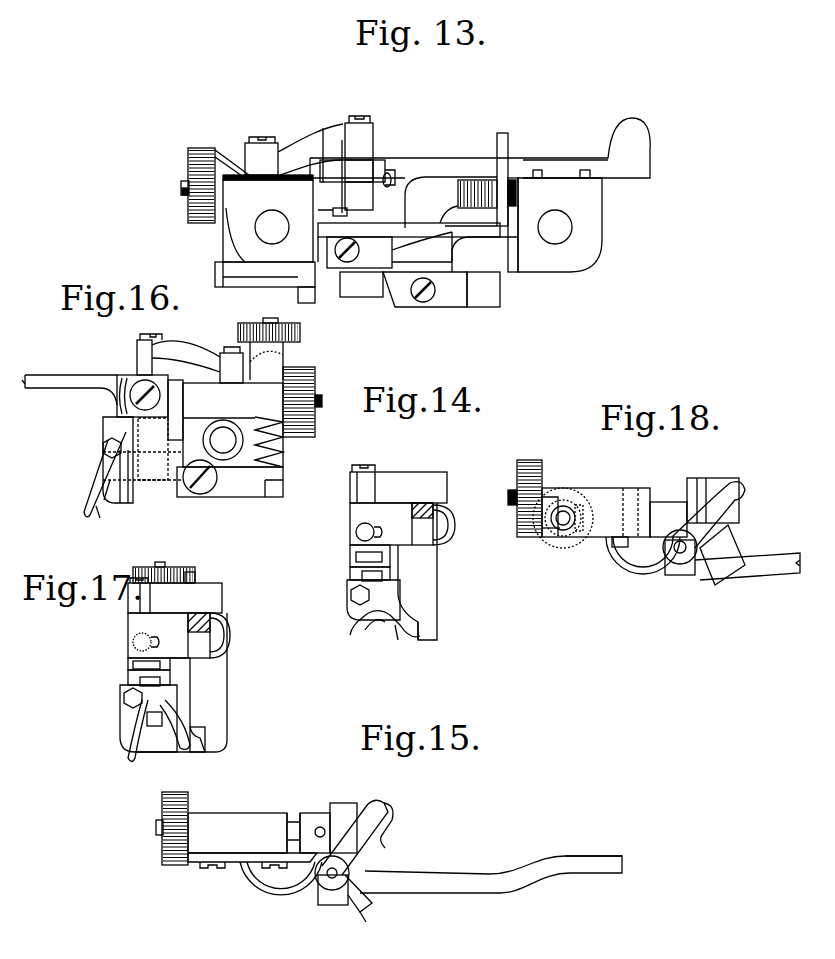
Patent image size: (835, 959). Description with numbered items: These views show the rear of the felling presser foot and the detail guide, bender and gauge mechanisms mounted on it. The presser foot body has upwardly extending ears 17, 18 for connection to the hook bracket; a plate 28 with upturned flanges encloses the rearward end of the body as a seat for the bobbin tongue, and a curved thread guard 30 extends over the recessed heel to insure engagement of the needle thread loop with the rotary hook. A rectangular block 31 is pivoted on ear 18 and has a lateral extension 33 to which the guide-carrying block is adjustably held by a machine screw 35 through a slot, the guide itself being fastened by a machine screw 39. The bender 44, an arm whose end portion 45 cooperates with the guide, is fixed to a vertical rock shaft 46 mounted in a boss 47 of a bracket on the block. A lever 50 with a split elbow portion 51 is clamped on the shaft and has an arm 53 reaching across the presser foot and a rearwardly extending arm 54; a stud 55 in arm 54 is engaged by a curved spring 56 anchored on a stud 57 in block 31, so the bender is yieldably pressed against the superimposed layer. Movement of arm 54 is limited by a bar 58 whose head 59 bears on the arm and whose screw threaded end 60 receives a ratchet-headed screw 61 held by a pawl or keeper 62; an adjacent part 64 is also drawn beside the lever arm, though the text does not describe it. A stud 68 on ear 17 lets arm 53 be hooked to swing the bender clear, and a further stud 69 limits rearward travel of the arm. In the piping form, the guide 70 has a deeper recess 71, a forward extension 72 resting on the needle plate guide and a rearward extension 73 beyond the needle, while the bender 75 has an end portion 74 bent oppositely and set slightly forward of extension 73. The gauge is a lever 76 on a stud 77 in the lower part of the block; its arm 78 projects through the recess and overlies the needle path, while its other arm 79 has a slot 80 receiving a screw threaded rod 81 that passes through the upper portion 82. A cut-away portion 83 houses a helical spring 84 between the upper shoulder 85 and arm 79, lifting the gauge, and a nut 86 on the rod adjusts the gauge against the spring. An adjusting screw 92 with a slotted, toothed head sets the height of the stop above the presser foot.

In FIG. 13, the ear 17 is at (590, 205).
In FIG. 13, the ear 18 is at (236, 212).
In FIG. 13, the plate 28 is at (474, 300).
In FIG. 13, the curved thread guard 30 is at (410, 250).
In FIG. 15, the rectangular block 31 is at (232, 822).
In FIG. 14, the lateral extension 33 is at (352, 574).
In FIG. 17, the lateral extension 33 is at (128, 680).
In FIG. 15, the lateral extension 33 is at (292, 813).
In FIG. 13, the machine screw 35 is at (333, 208).
In FIG. 14, the machine screw 35 is at (356, 556).
In FIG. 17, the machine screw 35 is at (128, 664).
In FIG. 15, the machine screw 35 is at (318, 826).
In FIG. 16, the machine screw 39 is at (102, 455).
In FIG. 14, the machine screw 39 is at (352, 595).
In FIG. 17, the machine screw 39 is at (124, 698).
In FIG. 13, the bender 44 is at (396, 296).
In FIG. 16, the bender 44 is at (125, 505).
In FIG. 18, the bender 44 is at (708, 505).
In FIG. 17, the bender 44 is at (160, 752).
In FIG. 18, the end portion 45 is at (740, 483).
In FIG. 18, the vertical rock shaft 46 is at (681, 555).
In FIG. 15, the vertical rock shaft 46 is at (331, 880).
In FIG. 14, the boss 47 is at (425, 580).
In FIG. 13, the lever 50 is at (460, 150).
In FIG. 14, the lever 50 is at (430, 502).
In FIG. 18, the lever 50 is at (760, 556).
In FIG. 17, the lever 50 is at (222, 628).
In FIG. 15, the lever 50 is at (402, 893).
In FIG. 15, the split elbow portion 51 is at (362, 905).
In FIG. 13, the arm 53 is at (522, 160).
In FIG. 15, the arm 53 is at (580, 874).
In FIG. 13, the rearwardly extending arm 54 is at (377, 165).
In FIG. 14, the rearwardly extending arm 54 is at (388, 512).
In FIG. 17, the rearwardly extending arm 54 is at (135, 620).
In FIG. 13, the stud 55 is at (355, 116).
In FIG. 13, the curved spring 56 is at (308, 138).
In FIG. 16, the curved spring 56 is at (132, 387).
In FIG. 14, the curved spring 56 is at (430, 472).
In FIG. 18, the curved spring 56 is at (641, 575).
In FIG. 17, the curved spring 56 is at (222, 598).
In FIG. 15, the curved spring 56 is at (280, 905).
In FIG. 13, the stud 57 is at (255, 143).
In FIG. 13, the bar 58 is at (323, 150).
In FIG. 13, the head 59 is at (389, 172).
In FIG. 14, the head 59 is at (360, 527).
In FIG. 17, the head 59 is at (133, 642).
In FIG. 13, the screw threaded end 60 is at (181, 188).
In FIG. 15, the screw threaded end 60 is at (156, 826).
In FIG. 13, the screw 61 is at (188, 162).
In FIG. 15, the screw 61 is at (164, 862).
In FIG. 13, the pawl or keeper 62 is at (212, 150).
In FIG. 13, the curved plate 64 is at (402, 200).
In FIG. 13, the stud 68 is at (586, 170).
In FIG. 13, the stud 69 is at (540, 170).
In FIG. 14, the guide 70 is at (350, 612).
In FIG. 17, the guide 70 is at (148, 718).
In FIG. 14, the recess 71 is at (375, 640).
In FIG. 17, the recess 71 is at (170, 713).
In FIG. 16, the forward extension 72 is at (92, 515).
In FIG. 14, the forward extension 72 is at (418, 640).
In FIG. 17, the forward extension 72 is at (195, 752).
In FIG. 15, the forward extension 72 is at (370, 876).
In FIG. 16, the rearward extension 73 is at (85, 512).
In FIG. 14, the rearward extension 73 is at (355, 635).
In FIG. 17, the rearward extension 73 is at (128, 755).
In FIG. 15, the rearward extension 73 is at (392, 812).
In FIG. 15, the end portion 74 is at (376, 818).
In FIG. 14, the bender 75 is at (395, 640).
In FIG. 15, the bender 75 is at (353, 838).
In FIG. 16, the lever 76 is at (232, 497).
In FIG. 18, the lever 76 is at (658, 500).
In FIG. 16, the stud 77 is at (205, 495).
In FIG. 18, the stud 77 is at (618, 555).
In FIG. 16, the arm 78 is at (118, 500).
In FIG. 18, the arm 78 is at (745, 512).
In FIG. 17, the arm 78 is at (148, 719).
In FIG. 16, the arm 79 is at (280, 482).
In FIG. 18, the arm 79 is at (548, 528).
In FIG. 18, the slot 80 is at (582, 507).
In FIG. 16, the screw threaded rod 81 is at (265, 323).
In FIG. 18, the screw threaded rod 81 is at (555, 535).
In FIG. 17, the screw threaded rod 81 is at (165, 567).
In FIG. 16, the upper portion 82 is at (300, 392).
In FIG. 18, the upper portion 82 is at (598, 492).
In FIG. 16, the cut-away portion 83 is at (238, 432).
In FIG. 18, the cut-away portion 83 is at (560, 500).
In FIG. 16, the helical spring 84 is at (283, 448).
In FIG. 18, the helical spring 84 is at (572, 532).
In FIG. 16, the upper shoulder 85 is at (267, 422).
In FIG. 16, the nut 86 is at (283, 360).
In FIG. 18, the nut 86 is at (560, 530).
In FIG. 17, the nut 86 is at (193, 583).
In FIG. 13, the adjusting screw 92 is at (478, 180).